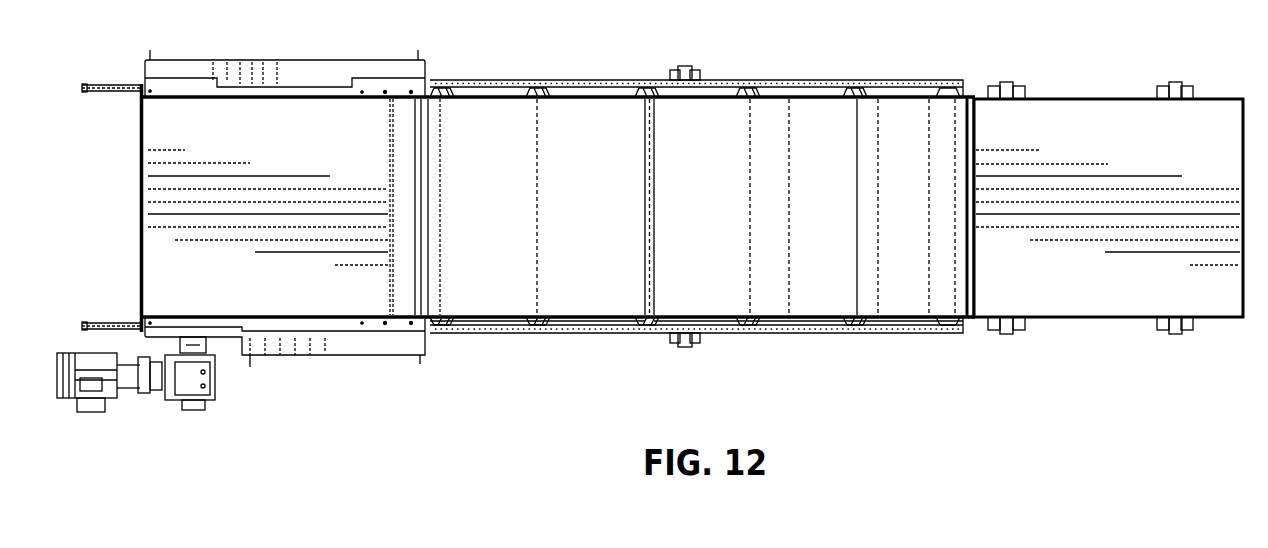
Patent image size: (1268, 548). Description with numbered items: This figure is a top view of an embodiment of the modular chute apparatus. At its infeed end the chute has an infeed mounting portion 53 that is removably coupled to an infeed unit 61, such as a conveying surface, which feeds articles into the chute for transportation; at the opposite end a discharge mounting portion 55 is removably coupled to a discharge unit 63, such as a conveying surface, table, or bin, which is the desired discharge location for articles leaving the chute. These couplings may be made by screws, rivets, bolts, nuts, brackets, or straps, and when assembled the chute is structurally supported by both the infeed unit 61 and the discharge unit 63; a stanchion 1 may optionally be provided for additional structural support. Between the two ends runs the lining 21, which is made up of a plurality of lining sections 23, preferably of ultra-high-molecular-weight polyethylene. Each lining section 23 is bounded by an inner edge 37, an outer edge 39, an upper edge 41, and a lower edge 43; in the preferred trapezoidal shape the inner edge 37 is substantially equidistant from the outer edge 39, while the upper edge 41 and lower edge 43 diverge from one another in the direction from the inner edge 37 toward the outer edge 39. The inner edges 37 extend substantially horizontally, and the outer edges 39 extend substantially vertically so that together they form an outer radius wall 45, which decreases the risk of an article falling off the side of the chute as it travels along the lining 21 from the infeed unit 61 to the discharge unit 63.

The stanchion 1 is at (693, 349).
The lining 21 is at (547, 293).
The lining sections 23 is at (615, 293).
The inner edge 37 is at (590, 308).
The outer edge 39 is at (580, 101).
The upper edge 41 is at (538, 203).
The lower edge 43 is at (645, 222).
The outer radius wall 45 is at (750, 211).
The infeed mounting portion 53 is at (390, 173).
The discharge mounting portion 55 is at (975, 175).
The infeed unit 61 is at (232, 113).
The discharge unit 63 is at (1197, 122).